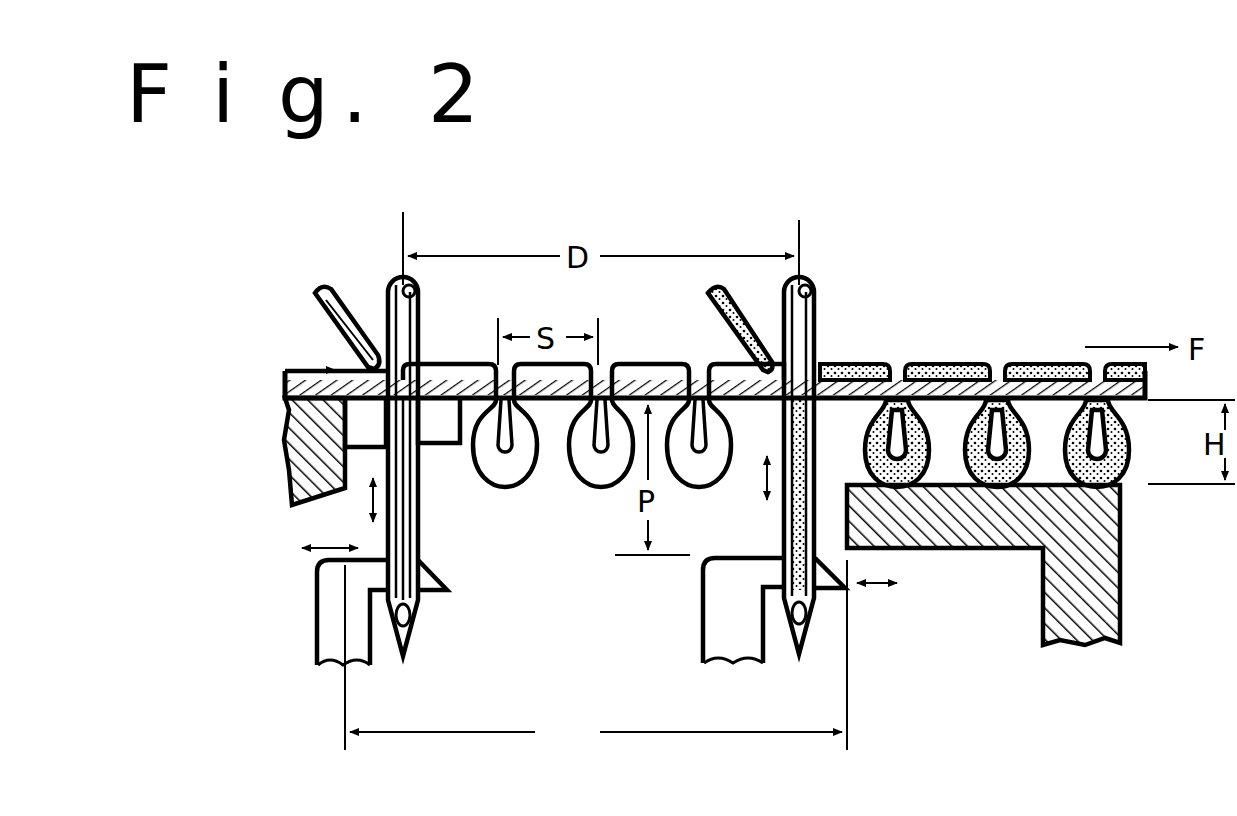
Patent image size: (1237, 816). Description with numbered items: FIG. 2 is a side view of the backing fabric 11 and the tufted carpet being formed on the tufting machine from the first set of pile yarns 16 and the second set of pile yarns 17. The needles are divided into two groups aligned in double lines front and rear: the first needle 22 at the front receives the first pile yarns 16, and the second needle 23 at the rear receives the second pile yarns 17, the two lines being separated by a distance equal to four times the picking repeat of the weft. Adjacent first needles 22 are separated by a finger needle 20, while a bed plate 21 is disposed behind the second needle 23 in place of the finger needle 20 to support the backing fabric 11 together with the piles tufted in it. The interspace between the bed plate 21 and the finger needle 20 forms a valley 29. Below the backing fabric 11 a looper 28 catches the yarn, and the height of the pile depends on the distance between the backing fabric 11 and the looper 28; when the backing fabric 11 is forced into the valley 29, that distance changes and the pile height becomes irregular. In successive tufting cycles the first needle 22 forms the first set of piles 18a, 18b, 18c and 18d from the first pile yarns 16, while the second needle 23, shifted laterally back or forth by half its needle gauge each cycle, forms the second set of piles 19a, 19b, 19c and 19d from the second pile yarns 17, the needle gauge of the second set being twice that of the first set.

The backing fabric 11 is at (290, 384).
The first set of pile yarns 16 is at (320, 290).
The second set of pile yarns 17 is at (728, 333).
The first set of piles 18a is at (712, 484).
The first set of piles 18b is at (622, 482).
The first set of piles 18c is at (522, 480).
The first set of piles 18d is at (388, 542).
The second set of piles 19a is at (1122, 490).
The second set of piles 19b is at (1032, 416).
The second set of piles 19c is at (935, 418).
The second set of piles 19d is at (790, 573).
The finger needle 20 is at (442, 452).
The bed plate 21 is at (930, 552).
The first needle 22 is at (422, 293).
The second needle 23 is at (818, 293).
The looper 28 is at (314, 630).
The valley 29 is at (596, 656).